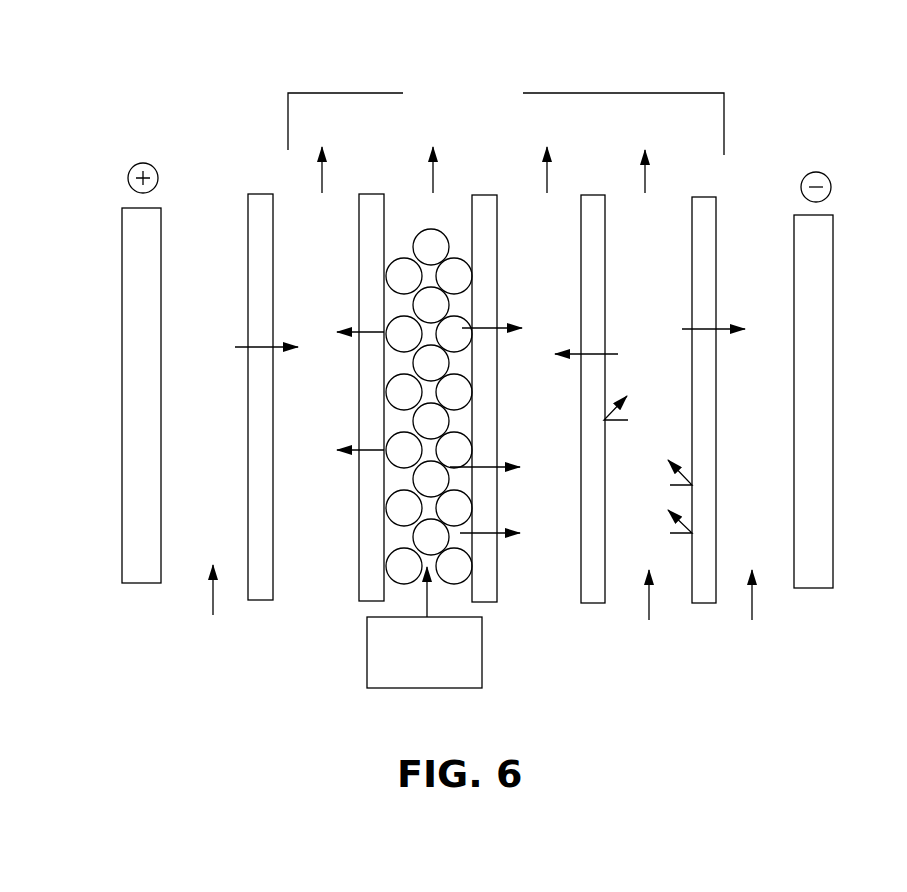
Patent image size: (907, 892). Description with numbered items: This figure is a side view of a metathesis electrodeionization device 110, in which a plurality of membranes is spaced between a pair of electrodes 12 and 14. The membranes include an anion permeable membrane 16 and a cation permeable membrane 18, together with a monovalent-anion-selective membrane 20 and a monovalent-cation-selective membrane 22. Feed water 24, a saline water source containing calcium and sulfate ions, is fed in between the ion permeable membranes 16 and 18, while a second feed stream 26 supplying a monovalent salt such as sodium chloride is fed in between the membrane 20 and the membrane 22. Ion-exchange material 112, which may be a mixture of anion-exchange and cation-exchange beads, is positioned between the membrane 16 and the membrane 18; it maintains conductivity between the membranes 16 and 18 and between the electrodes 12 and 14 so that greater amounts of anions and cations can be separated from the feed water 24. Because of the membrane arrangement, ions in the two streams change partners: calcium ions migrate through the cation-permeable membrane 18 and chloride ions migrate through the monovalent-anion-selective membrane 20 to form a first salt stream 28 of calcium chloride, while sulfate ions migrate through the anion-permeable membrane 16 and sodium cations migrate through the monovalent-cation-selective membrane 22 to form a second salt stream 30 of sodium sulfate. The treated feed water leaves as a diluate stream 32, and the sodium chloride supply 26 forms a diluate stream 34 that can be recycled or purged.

The metathesis electrodeionization device 110 is at (187, 87).
The electrode 12 is at (130, 380).
The electrode 14 is at (827, 308).
The anion permeable membrane 16 is at (365, 402).
The cation permeable membrane 18 is at (255, 425).
The monovalent-anion-selective membrane 20 is at (603, 277).
The monovalent-cation-selective membrane 22 is at (713, 272).
The feed water 24 is at (358, 673).
The salt supply feed stream 26 is at (597, 677).
The first salt stream 28 is at (563, 142).
The second salt stream 30 is at (347, 133).
The diluate stream 32 is at (452, 137).
The diluate stream 34 is at (667, 165).
The ion-exchange material 112 is at (458, 392).